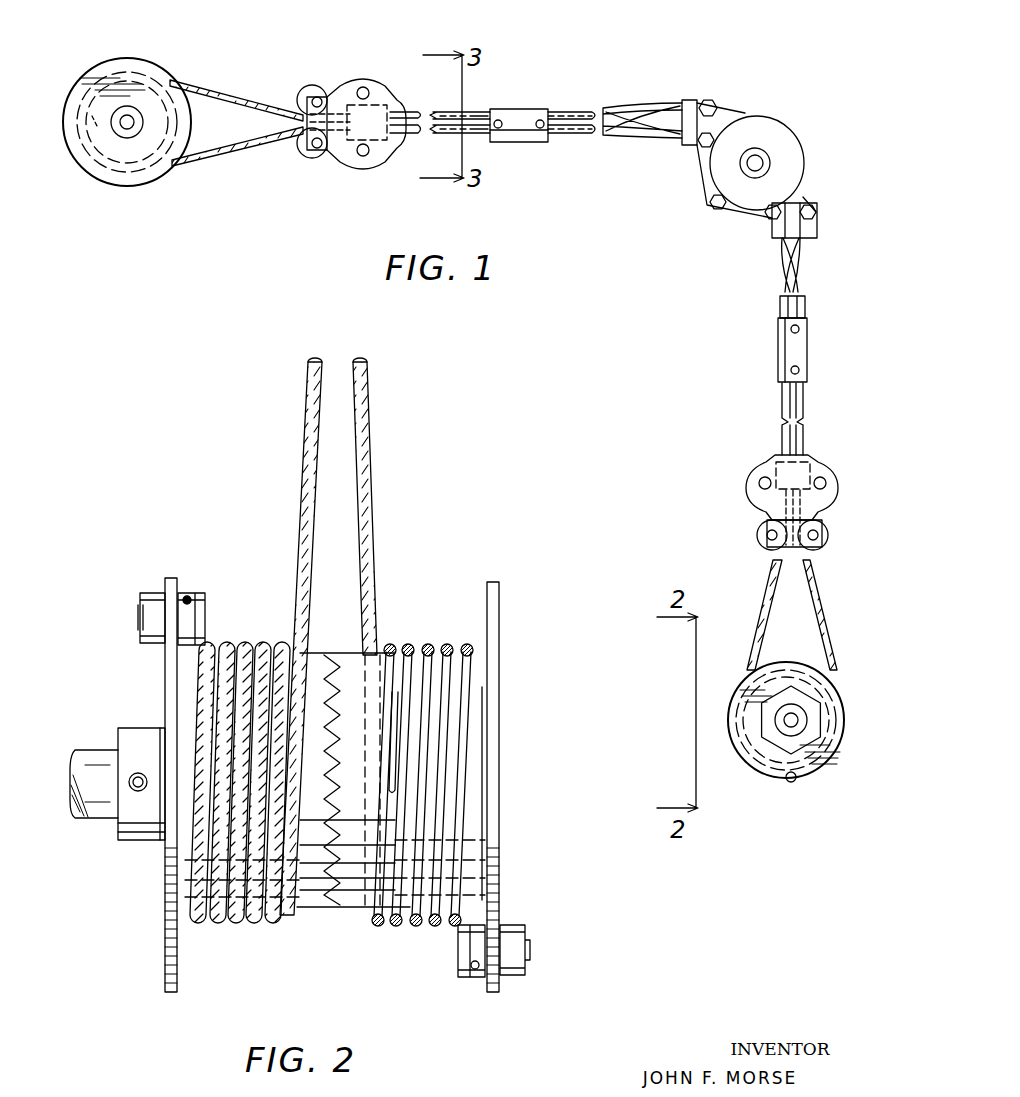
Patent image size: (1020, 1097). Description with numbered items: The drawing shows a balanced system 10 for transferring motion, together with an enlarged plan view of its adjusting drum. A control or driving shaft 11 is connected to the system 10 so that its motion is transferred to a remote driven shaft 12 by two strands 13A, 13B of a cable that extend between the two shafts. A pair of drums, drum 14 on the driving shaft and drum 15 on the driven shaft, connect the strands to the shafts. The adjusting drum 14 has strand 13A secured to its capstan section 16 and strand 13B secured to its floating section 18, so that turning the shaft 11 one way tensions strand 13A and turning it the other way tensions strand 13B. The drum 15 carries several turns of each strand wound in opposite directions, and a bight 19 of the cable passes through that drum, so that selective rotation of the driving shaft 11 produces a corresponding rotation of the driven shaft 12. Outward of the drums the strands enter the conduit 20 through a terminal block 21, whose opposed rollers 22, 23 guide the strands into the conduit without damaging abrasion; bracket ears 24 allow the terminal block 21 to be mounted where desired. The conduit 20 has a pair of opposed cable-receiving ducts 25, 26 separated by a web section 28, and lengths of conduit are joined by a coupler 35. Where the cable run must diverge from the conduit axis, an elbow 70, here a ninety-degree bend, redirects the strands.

In FIG. 1, the balanced system for transferring motion 10 is at (706, 234).
In FIG. 1, the driving shaft 11 is at (790, 724).
In FIG. 2, the driving shaft 11 is at (95, 748).
In FIG. 1, the driven shaft 12 is at (131, 120).
In FIG. 1, the cable strand 13A is at (243, 152).
In FIG. 2, the cable strand 13A is at (312, 516).
In FIG. 1, the cable strand 13B is at (250, 100).
In FIG. 2, the cable strand 13B is at (370, 530).
In FIG. 1, the adjusting drum 14 is at (812, 785).
In FIG. 2, the adjusting drum 14 is at (508, 714).
In FIG. 1, the drum 15 is at (79, 66).
In FIG. 2, the capstan section 16 is at (313, 910).
In FIG. 2, the floating section 18 is at (358, 910).
In FIG. 1, the bight 19 is at (90, 162).
In FIG. 1, the conduit 20 is at (472, 105).
In FIG. 1, the terminal block 21 is at (375, 80).
In FIG. 1, the roller 22 is at (317, 86).
In FIG. 1, the roller 23 is at (313, 158).
In FIG. 1, the bracket ears 24 is at (380, 96).
In FIG. 1, the cable receiving duct 25 is at (487, 112).
In FIG. 1, the cable receiving duct 26 is at (480, 140).
In FIG. 1, the web section 28 is at (570, 138).
In FIG. 1, the coupler 35 is at (540, 150).
In FIG. 1, the elbow 70 is at (773, 118).